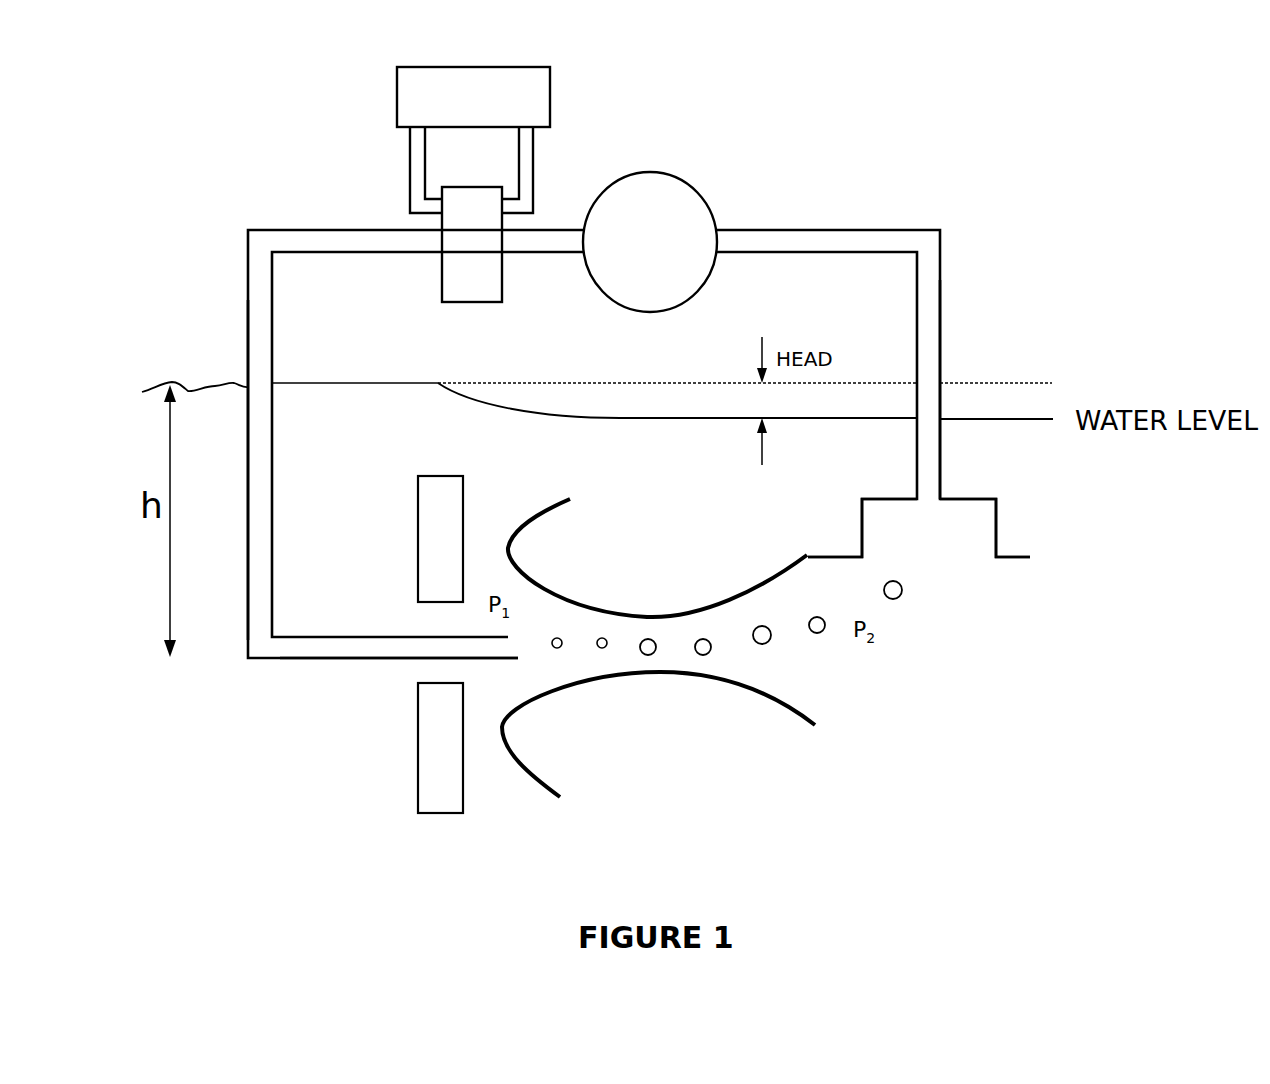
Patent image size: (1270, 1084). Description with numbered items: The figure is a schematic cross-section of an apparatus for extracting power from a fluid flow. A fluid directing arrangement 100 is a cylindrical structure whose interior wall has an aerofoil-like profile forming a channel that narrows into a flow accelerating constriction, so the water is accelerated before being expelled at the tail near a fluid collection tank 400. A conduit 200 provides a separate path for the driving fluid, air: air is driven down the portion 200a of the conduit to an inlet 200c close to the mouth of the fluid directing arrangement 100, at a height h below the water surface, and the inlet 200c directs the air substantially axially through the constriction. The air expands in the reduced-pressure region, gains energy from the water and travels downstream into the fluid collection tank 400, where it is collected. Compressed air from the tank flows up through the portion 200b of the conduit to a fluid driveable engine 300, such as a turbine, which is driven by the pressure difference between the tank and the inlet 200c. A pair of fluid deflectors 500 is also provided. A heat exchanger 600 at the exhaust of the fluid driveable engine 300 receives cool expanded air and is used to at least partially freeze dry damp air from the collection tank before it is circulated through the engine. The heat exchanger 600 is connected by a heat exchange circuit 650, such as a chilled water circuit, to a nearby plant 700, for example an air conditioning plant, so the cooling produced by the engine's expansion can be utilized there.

The fluid directing arrangement 100 is at (658, 648).
The conduit 200 is at (805, 230).
The portion of the conduit 200a is at (248, 300).
The portion of the conduit 200b is at (940, 330).
The inlet 200c is at (483, 660).
The fluid driveable engine 300 is at (648, 172).
The fluid collection tank 400 is at (996, 522).
The fluid deflectors 500 is at (417, 743).
The heat exchanger 600 is at (442, 303).
The heat exchange circuit 650 is at (410, 170).
The plant 700 is at (397, 70).